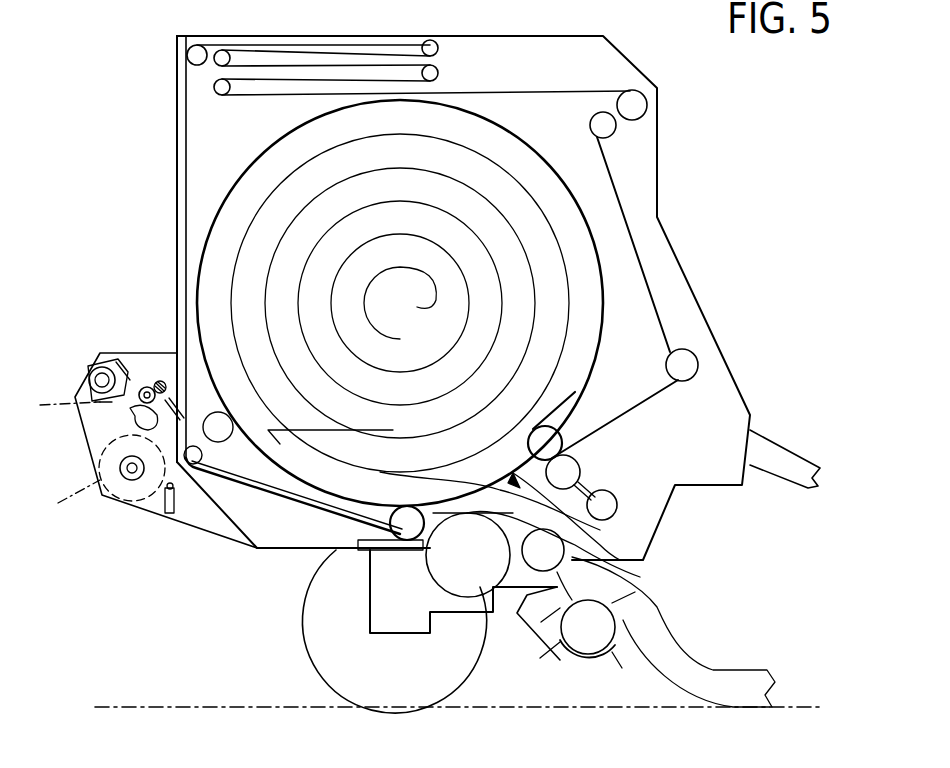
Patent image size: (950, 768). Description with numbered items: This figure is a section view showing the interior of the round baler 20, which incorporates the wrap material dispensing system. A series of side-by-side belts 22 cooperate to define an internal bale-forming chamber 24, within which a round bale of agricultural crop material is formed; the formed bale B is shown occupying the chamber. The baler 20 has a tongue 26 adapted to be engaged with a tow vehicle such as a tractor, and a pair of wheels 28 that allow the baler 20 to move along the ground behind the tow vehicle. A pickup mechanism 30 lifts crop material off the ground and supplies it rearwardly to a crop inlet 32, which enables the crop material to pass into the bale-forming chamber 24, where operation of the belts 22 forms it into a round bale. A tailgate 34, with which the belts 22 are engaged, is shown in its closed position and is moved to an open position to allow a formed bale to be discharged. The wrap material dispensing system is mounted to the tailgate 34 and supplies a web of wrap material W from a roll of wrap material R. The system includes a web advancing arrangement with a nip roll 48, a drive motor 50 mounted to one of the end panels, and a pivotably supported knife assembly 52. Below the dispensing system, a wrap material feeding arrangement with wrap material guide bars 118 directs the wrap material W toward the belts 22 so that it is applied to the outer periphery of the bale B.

The round baler 20 is at (696, 148).
The belts 22 is at (200, 270).
The bale-forming chamber 24 is at (441, 120).
The tongue 26 is at (800, 450).
The wheels 28 is at (303, 612).
The pickup mechanism 30 is at (637, 626).
The crop inlet 32 is at (600, 530).
The tailgate 34 is at (177, 203).
The nip roll 48 is at (162, 372).
The drive motor 50 is at (93, 363).
The knife assembly 52 is at (122, 432).
The wrap material guide bars 118 is at (273, 461).
The bale B is at (220, 252).
The wrap material web W is at (57, 404).
The roll of wrap material R is at (99, 476).